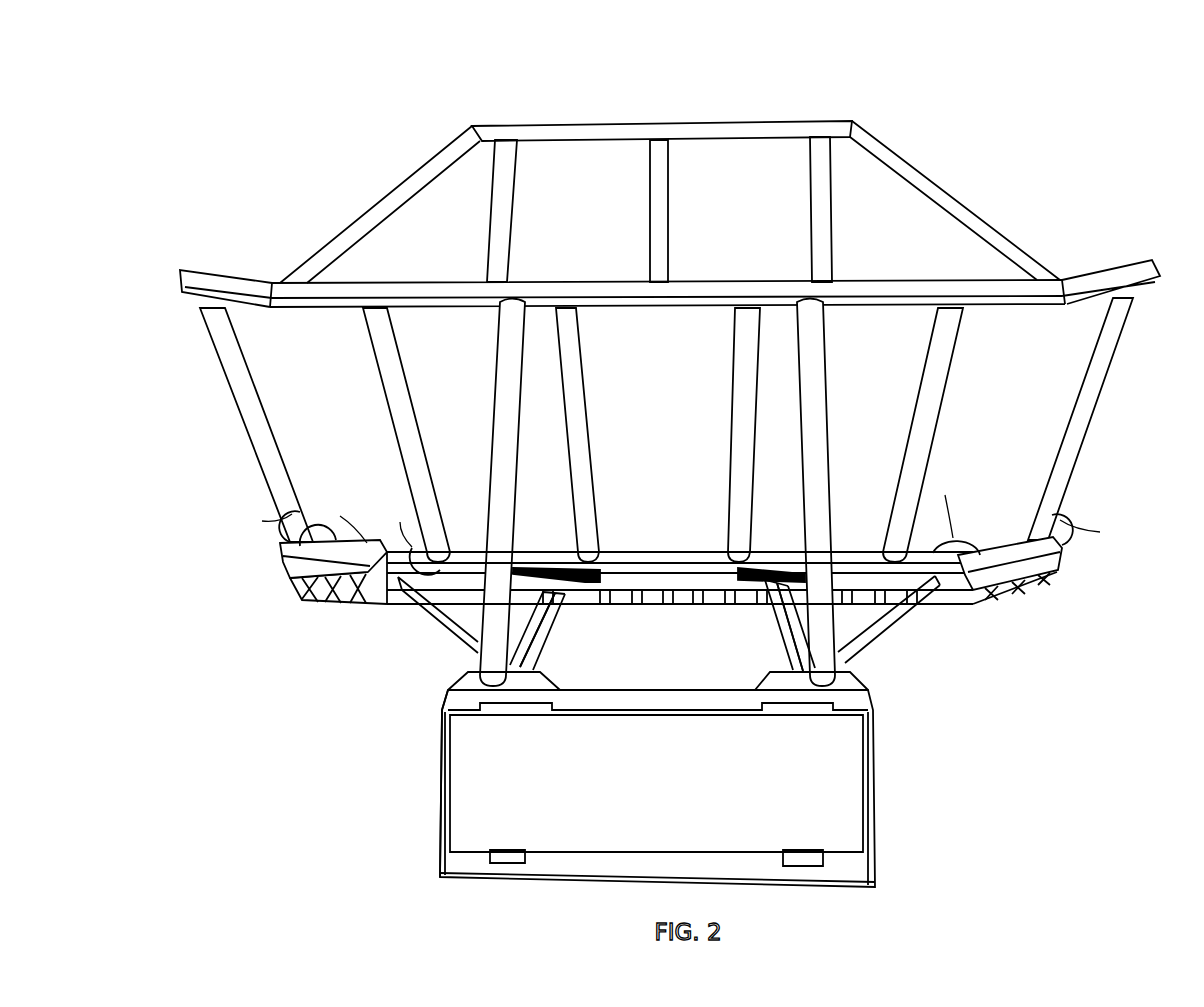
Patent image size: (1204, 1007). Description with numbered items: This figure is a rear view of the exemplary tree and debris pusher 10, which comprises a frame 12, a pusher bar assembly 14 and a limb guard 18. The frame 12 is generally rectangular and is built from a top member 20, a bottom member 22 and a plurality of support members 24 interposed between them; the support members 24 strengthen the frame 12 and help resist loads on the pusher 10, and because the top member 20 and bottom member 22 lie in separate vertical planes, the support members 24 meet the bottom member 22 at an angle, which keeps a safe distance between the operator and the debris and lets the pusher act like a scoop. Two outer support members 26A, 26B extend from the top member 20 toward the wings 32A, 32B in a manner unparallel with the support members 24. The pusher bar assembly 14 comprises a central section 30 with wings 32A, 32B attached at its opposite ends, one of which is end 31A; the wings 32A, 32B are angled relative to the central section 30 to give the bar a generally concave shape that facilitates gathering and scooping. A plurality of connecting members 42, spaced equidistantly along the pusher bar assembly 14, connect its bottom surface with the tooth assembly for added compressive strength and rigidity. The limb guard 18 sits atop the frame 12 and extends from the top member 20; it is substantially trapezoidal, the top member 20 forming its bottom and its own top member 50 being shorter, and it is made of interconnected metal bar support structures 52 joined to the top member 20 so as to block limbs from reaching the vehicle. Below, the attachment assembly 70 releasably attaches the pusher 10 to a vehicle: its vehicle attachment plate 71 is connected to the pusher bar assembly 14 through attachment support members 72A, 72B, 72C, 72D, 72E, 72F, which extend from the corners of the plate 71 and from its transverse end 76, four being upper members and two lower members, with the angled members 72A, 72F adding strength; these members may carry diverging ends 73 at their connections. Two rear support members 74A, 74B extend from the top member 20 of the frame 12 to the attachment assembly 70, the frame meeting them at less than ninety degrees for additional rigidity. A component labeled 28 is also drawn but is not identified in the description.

The pusher 10 is at (922, 157).
The frame 12 is at (665, 357).
The pusher bar assembly 14 is at (353, 578).
The limb guard 18 is at (380, 203).
The top member 20 is at (770, 282).
The bottom member 22 is at (625, 557).
The support members 24 is at (381, 376).
The outer support member 26A is at (234, 395).
The outer support member 26B is at (1094, 352).
The storage box 28 is at (667, 788).
The central section 30 is at (680, 563).
The end of central section 31A is at (371, 543).
The wing 32A is at (290, 570).
The wing 32B is at (1062, 557).
The connecting members 42 is at (1010, 597).
The top member of limb guard 50 is at (700, 121).
The support structures 52 is at (957, 201).
The attachment assembly 70 is at (870, 688).
The vehicle attachment plate 71 is at (853, 792).
The attachment support member 72A is at (437, 620).
The attachment support member 72B is at (528, 630).
The attachment support member 72C is at (542, 648).
The attachment support member 72D is at (805, 627).
The attachment support member 72E is at (778, 622).
The attachment support member 72F is at (907, 637).
The diverging ends 73 is at (530, 563).
The rear support member 74A is at (498, 335).
The rear support member 74B is at (825, 325).
The transverse end 76 is at (440, 813).